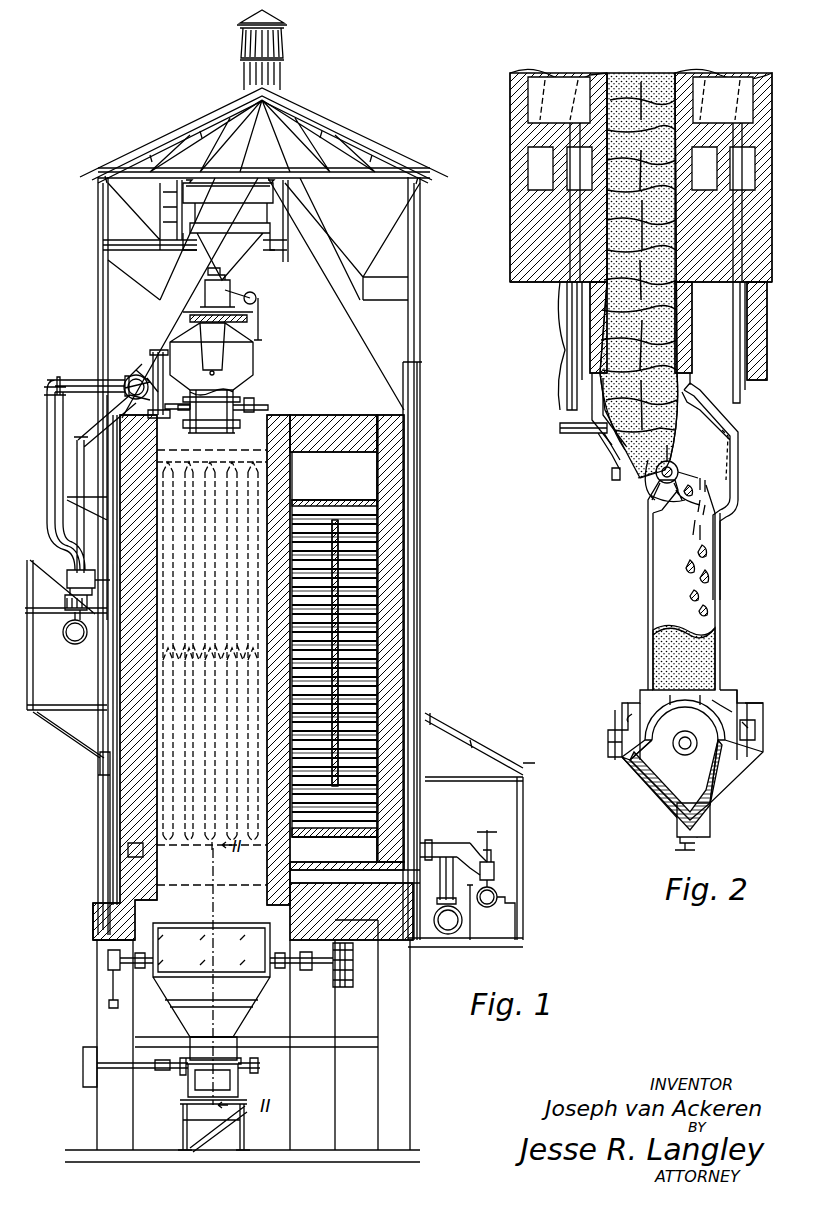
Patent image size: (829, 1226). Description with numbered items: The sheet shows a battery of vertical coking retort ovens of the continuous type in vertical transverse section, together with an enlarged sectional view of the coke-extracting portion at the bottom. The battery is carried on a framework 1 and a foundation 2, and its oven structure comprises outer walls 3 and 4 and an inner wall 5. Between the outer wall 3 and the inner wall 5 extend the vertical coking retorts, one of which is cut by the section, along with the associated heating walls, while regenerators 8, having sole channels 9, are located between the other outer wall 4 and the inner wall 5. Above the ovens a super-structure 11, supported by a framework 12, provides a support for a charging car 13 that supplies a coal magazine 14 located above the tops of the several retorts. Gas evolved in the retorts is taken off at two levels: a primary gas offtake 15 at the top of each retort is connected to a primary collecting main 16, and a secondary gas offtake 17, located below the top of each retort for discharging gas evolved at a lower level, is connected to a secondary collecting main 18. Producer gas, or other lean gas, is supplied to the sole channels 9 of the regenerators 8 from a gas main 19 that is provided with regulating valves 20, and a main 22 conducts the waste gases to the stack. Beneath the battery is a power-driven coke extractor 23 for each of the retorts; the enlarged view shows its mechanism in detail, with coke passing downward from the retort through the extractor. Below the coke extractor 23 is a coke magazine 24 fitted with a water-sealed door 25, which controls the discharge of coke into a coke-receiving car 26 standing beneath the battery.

In FIG. 1, the framework 1 is at (100, 1025).
In FIG. 1, the foundation 2 is at (100, 935).
In FIG. 1, the outer wall 3 is at (125, 792).
In FIG. 1, the outer wall 4 is at (392, 660).
In FIG. 1, the inner wall 5 is at (290, 485).
In FIG. 1, the regenerators 8 is at (370, 580).
In FIG. 1, the sole channels 9 is at (390, 838).
In FIG. 1, the super-structure 11 is at (395, 150).
In FIG. 1, the framework 12 is at (414, 478).
In FIG. 1, the charging car 13 is at (240, 260).
In FIG. 1, the coal magazine 14 is at (255, 355).
In FIG. 1, the primary gas offtake 15 is at (150, 360).
In FIG. 1, the primary collecting main 16 is at (124, 385).
In FIG. 1, the secondary gas offtake 17 is at (62, 575).
In FIG. 1, the secondary collecting main 18 is at (76, 636).
In FIG. 1, the gas main 19 is at (497, 897).
In FIG. 1, the regulating valves 20 is at (497, 860).
In FIG. 1, the main 22 is at (450, 920).
In FIG. 1, the coke extractor 23 is at (295, 965).
In FIG. 2, the coke extractor 23 is at (650, 485).
In FIG. 1, the coke magazine 24 is at (195, 1027).
In FIG. 2, the coke magazine 24 is at (720, 620).
In FIG. 2, the water-sealed door 25 is at (656, 765).
In FIG. 1, the coke-receiving car 26 is at (190, 1117).